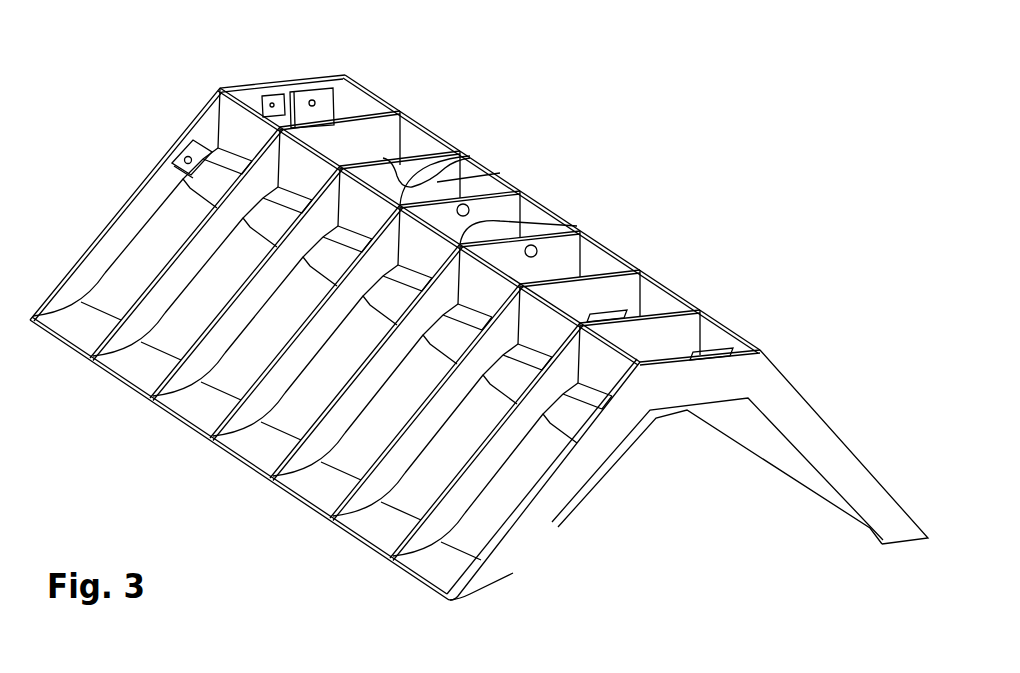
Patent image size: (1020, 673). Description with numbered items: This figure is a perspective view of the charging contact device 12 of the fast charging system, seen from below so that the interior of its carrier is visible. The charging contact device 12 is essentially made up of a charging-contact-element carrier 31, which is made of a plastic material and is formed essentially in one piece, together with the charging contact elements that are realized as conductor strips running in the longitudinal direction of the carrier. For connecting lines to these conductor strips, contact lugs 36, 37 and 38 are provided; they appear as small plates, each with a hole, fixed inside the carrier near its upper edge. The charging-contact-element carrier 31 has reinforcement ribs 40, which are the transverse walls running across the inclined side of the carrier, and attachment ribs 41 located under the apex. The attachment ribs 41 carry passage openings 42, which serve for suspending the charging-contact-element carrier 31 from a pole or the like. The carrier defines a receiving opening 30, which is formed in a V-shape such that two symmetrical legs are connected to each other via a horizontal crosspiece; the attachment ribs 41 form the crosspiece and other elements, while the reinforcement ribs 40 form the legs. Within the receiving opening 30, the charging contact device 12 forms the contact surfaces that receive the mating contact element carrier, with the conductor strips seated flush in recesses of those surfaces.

The charging contact device 12 is at (752, 172).
The receiving opening 30 is at (692, 580).
The charging-contact-element carrier 31 is at (690, 288).
The contact lug 36 is at (187, 155).
The contact lug 37 is at (275, 100).
The contact lug 38 is at (323, 92).
The reinforcement ribs 40 is at (367, 493).
The attachment ribs 41 is at (503, 203).
The passage openings 42 is at (463, 204).